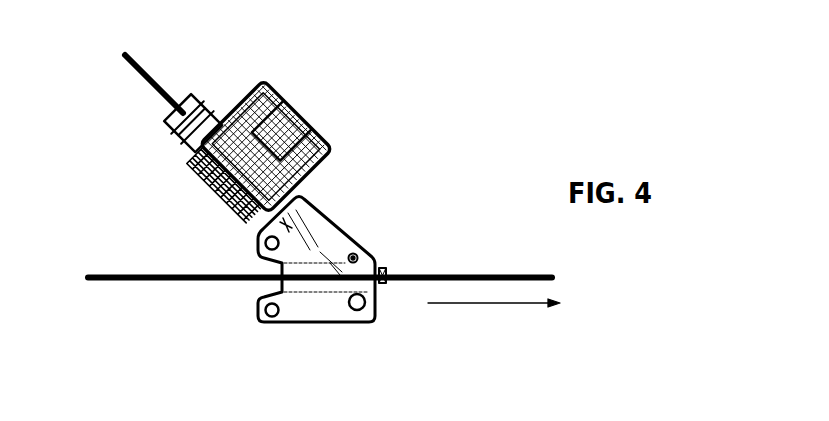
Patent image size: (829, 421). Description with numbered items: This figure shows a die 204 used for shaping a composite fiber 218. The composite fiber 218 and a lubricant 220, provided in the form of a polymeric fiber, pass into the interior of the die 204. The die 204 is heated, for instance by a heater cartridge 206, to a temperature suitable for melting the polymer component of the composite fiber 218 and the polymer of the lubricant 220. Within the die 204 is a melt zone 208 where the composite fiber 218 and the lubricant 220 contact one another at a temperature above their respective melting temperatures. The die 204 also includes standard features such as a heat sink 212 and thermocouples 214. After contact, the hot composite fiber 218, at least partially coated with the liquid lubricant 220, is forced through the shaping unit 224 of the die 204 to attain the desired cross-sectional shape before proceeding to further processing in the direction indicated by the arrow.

The die 204 is at (378, 130).
The heater cartridge 206 is at (373, 318).
The melt zone 208 is at (300, 295).
The heat sink 212 is at (215, 100).
The thermocouples 214 is at (355, 252).
The composite fiber 218 is at (168, 275).
The lubricant 220 is at (142, 85).
The shaping unit 224 is at (387, 266).